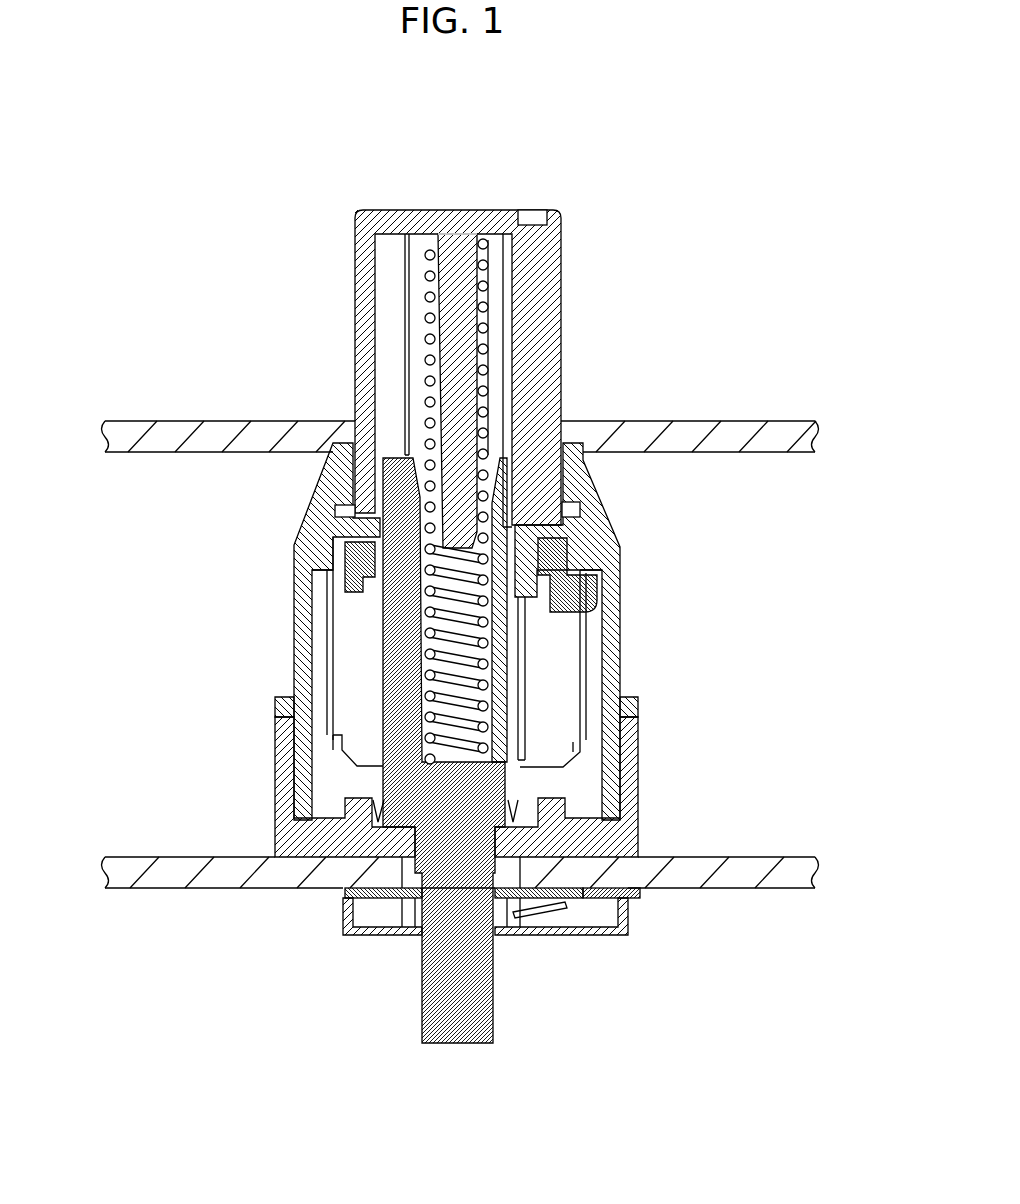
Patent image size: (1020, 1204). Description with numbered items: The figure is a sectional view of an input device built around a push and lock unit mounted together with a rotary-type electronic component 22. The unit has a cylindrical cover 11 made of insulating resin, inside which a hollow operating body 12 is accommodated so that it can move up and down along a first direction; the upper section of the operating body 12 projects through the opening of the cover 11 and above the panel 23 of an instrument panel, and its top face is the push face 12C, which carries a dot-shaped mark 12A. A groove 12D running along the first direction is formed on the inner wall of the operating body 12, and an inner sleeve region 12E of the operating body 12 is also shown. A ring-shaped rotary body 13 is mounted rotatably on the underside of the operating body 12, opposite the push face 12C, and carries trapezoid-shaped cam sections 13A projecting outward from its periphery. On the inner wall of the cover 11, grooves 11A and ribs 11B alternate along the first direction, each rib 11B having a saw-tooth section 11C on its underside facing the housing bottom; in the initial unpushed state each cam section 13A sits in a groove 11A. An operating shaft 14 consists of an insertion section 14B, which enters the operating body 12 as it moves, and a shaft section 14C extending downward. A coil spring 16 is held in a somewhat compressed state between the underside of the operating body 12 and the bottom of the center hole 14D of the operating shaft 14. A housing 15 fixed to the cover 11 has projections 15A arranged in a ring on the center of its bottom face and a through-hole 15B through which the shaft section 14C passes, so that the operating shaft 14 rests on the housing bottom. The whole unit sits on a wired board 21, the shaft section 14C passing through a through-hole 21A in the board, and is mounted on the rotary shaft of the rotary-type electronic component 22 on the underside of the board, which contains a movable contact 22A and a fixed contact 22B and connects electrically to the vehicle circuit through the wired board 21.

The cover 11 is at (473, 631).
The groove 11A is at (590, 643).
The rib 11B is at (565, 697).
The saw-tooth section 11C is at (562, 747).
The operating body 12 is at (439, 344).
The dot-shaped mark 12A is at (530, 218).
The push face 12C is at (408, 210).
The groove 12D is at (403, 263).
The cap inner sleeve 12E is at (485, 343).
The rotary body 13 is at (621, 556).
The cam section 13A is at (573, 593).
The operating shaft 14 is at (305, 765).
The insertion section 14B is at (499, 610).
The shaft section 14C is at (430, 1033).
The center hole 14D is at (437, 665).
The housing 15 is at (473, 845).
The projection 15A is at (557, 813).
The through-hole 15B is at (348, 897).
The spring 16 is at (430, 630).
The wired board 21 is at (190, 875).
The through-hole 21A is at (507, 882).
The rotary-type electronic component 22 is at (490, 943).
The movable contact 22A is at (527, 907).
The fixed contact 22B is at (573, 897).
The panel 23 is at (688, 435).